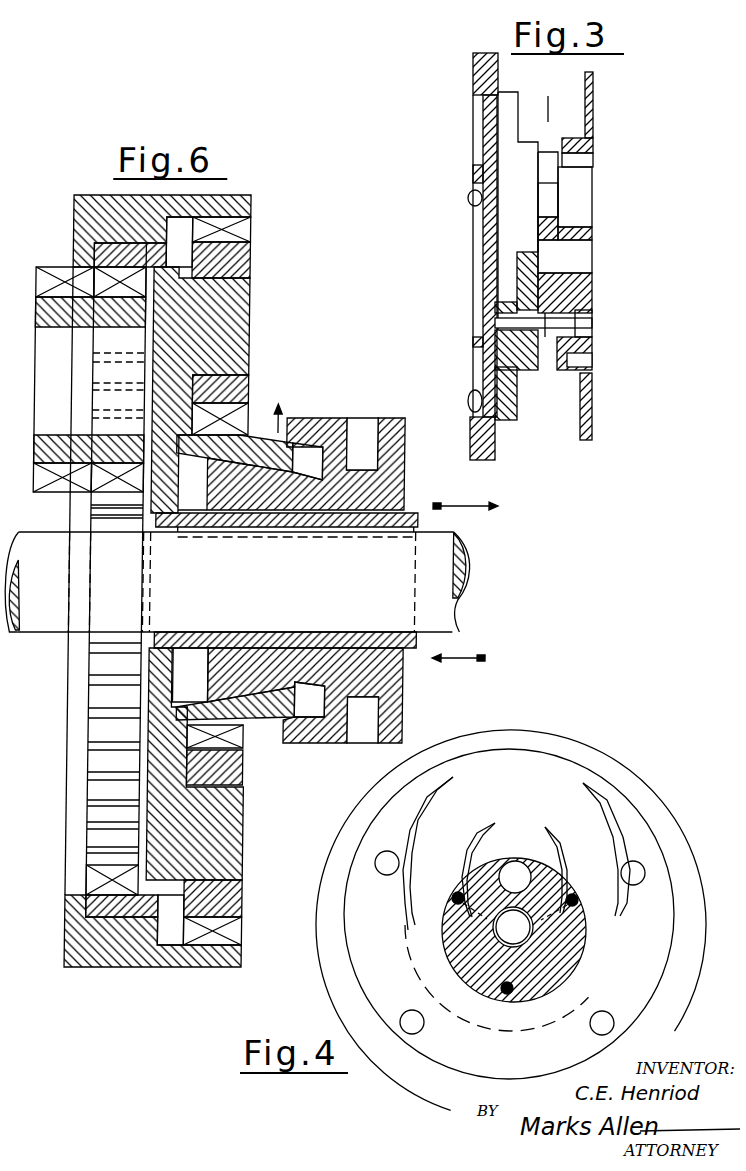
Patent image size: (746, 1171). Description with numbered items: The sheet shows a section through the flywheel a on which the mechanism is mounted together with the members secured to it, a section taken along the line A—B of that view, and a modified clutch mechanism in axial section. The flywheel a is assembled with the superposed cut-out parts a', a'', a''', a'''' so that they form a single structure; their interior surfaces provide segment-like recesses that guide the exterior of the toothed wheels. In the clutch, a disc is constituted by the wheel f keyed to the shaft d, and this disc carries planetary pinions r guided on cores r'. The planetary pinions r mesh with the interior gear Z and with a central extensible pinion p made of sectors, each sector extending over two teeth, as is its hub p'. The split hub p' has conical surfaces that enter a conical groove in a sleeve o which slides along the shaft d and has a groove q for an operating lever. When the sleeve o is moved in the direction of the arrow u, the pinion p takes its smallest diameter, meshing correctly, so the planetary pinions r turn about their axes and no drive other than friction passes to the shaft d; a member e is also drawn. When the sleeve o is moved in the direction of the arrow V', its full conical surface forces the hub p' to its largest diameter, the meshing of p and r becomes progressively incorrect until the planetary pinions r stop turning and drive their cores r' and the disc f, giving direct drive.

In FIG. 6, the flywheel a is at (144, 581).
In FIG. 3, the flywheel a is at (474, 256).
In FIG. 4, the flywheel a is at (511, 920).
In FIG. 3, the flywheel part a' is at (518, 211).
In FIG. 4, the flywheel part a' is at (516, 853).
In FIG. 3, the flywheel part a'' is at (527, 271).
In FIG. 4, the flywheel part a'' is at (514, 870).
In FIG. 3, the flywheel part a''' is at (543, 261).
In FIG. 4, the flywheel part a''' is at (514, 877).
In FIG. 3, the flywheel part a'''' is at (584, 256).
In FIG. 6, the wheel f is at (90, 252).
In FIG. 6, the flanged disc e is at (34, 344).
In FIG. 6, the interior gear Z is at (246, 232).
In FIG. 6, the cores r' is at (212, 573).
In FIG. 6, the planetary pinions r is at (228, 580).
In FIG. 6, the extensible pinion p is at (235, 568).
In FIG. 6, the hub p' is at (308, 580).
In FIG. 6, the sleeve o is at (315, 425).
In FIG. 6, the groove q is at (367, 429).
In FIG. 6, the section line point A is at (277, 410).
In FIG. 3, the section line point A is at (545, 100).
In FIG. 6, the section line point B is at (275, 728).
In FIG. 3, the section line point B is at (545, 353).
In FIG. 6, the shaft d is at (460, 604).
In FIG. 6, the arrow V' is at (465, 497).
In FIG. 6, the arrow u is at (458, 667).